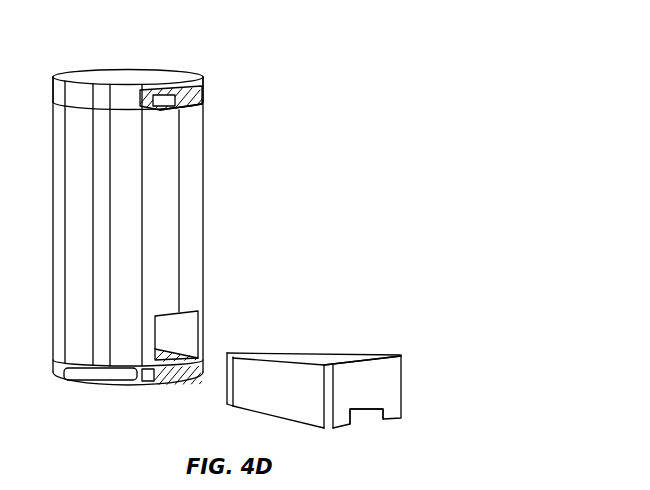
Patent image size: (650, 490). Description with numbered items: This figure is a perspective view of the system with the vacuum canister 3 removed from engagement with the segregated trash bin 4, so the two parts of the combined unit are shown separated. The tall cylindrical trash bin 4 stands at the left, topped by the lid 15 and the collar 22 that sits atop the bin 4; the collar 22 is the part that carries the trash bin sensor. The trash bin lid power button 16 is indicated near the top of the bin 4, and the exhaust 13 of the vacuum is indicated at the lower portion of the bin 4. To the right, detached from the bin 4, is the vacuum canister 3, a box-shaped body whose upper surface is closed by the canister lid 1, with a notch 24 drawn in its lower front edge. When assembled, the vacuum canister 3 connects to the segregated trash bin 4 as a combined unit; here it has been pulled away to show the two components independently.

The canister lid 1 is at (337, 352).
The vacuum canister 3 is at (402, 380).
The trash bin 4 is at (201, 248).
The exhaust 13 is at (87, 375).
The lid 15 is at (95, 78).
The trash bin lid power button 16 is at (170, 113).
The collar 22 is at (131, 92).
The notch 24 is at (362, 417).